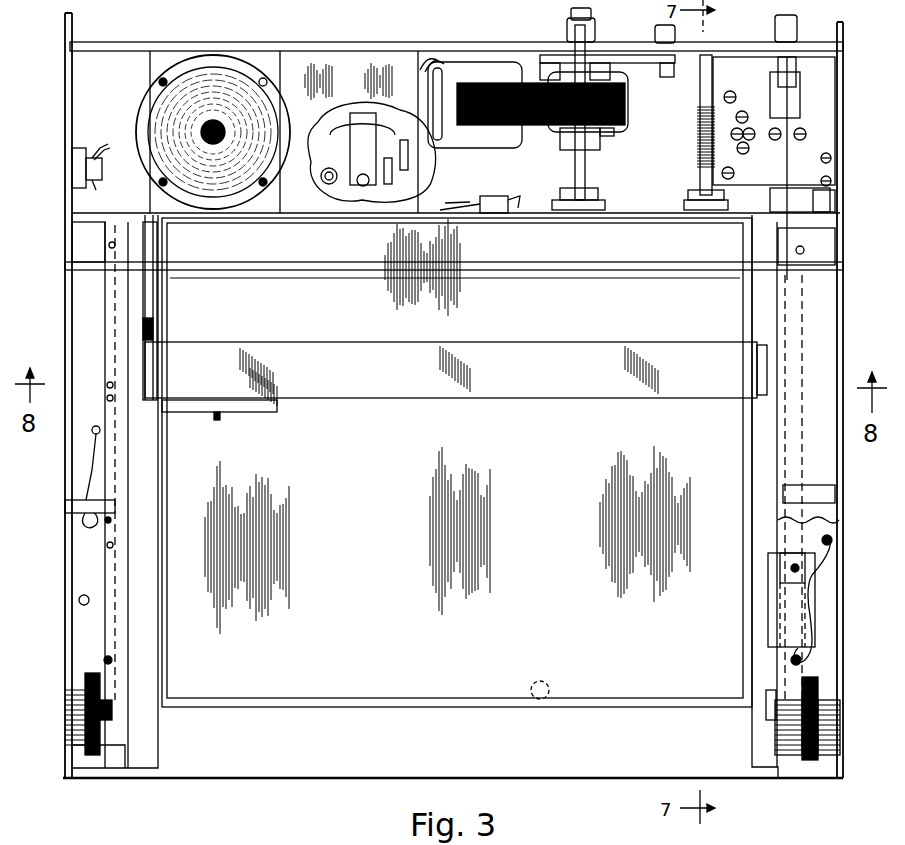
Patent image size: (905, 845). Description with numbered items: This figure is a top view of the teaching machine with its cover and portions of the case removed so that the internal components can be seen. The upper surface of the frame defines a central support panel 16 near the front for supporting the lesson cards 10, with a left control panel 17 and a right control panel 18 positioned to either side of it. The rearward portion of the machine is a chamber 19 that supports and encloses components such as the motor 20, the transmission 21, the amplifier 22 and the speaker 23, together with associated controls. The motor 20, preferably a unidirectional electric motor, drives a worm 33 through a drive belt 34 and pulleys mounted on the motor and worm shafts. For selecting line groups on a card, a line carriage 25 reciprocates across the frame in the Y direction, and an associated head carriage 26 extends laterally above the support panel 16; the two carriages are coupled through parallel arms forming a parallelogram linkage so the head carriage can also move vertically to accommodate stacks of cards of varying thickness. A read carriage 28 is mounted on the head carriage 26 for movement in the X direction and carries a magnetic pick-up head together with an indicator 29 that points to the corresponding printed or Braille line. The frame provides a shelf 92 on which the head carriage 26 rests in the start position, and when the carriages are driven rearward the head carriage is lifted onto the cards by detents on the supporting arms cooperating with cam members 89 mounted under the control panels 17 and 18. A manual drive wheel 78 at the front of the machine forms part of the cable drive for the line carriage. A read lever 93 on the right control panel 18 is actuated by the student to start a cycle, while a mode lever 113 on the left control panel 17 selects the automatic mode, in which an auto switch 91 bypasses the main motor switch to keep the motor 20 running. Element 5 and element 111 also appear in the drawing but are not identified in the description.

The electrical component 5 is at (333, 160).
The lesson card 10 is at (546, 702).
The central support panel 16 is at (352, 700).
The left control panel 17 is at (74, 436).
The right control panel 18 is at (834, 457).
The chamber 19 is at (117, 52).
The motor 20 is at (552, 136).
The transmission 21 is at (831, 111).
The amplifier 22 is at (341, 56).
The speaker 23 is at (212, 70).
The line carriage 25 is at (152, 303).
The head carriage 26 is at (520, 398).
The read carriage 28 is at (279, 409).
The indicator 29 is at (219, 420).
The worm 33 is at (698, 162).
The drive belt 34 is at (623, 60).
The manual drive wheel 78 is at (810, 762).
The cam member 89 is at (806, 596).
The auto switch 91 is at (97, 182).
The shelf 92 is at (548, 778).
The read lever 93 is at (500, 212).
The base plate 111 is at (247, 762).
The mode lever 113 is at (63, 510).